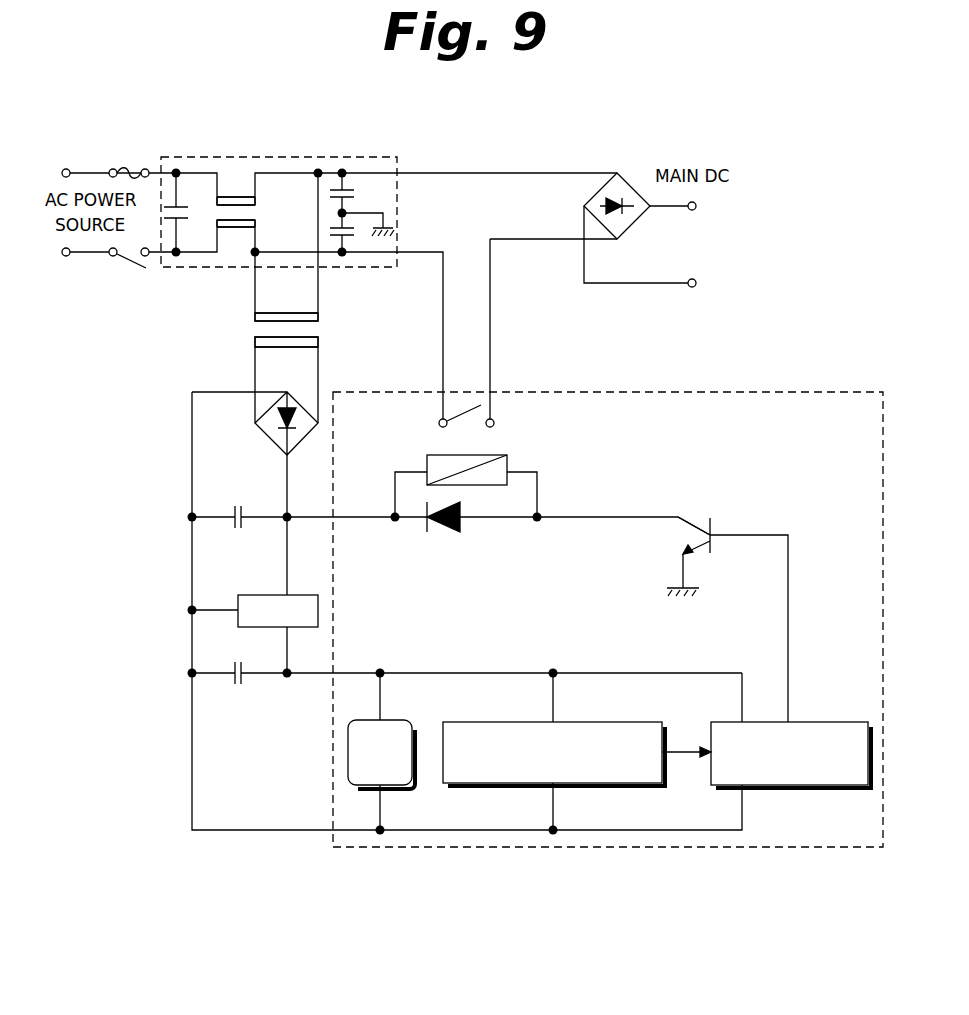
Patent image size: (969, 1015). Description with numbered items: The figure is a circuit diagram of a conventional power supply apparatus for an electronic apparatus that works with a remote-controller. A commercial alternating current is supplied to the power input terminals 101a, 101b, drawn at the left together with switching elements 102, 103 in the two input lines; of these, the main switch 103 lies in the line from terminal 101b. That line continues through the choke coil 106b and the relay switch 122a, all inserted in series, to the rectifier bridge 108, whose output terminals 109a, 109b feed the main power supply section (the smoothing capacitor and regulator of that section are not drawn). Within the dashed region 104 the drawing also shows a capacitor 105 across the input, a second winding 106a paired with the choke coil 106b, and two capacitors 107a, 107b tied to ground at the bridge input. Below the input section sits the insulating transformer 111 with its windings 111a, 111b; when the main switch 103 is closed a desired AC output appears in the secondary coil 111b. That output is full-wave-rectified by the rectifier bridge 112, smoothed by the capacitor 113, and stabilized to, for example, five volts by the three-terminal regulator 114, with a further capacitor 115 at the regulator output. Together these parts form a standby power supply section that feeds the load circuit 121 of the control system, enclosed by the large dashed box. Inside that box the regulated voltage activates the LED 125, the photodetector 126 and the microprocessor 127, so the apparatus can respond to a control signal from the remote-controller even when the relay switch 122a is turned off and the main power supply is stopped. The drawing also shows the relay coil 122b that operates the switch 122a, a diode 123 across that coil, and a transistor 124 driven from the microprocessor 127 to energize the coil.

The power input terminal 101a is at (66, 168).
The power input terminal 101b is at (66, 256).
The switch 102 is at (128, 169).
The main switch 103 is at (132, 271).
The input circuit 104 is at (362, 157).
The capacitor 105 is at (182, 212).
The primary electrode 106a is at (240, 197).
The choke coil 106b is at (236, 227).
The capacitor 107a is at (355, 193).
The capacitor 107b is at (355, 235).
The rectifier bridge 108 is at (612, 172).
The output terminal 109a is at (697, 206).
The output terminal 109b is at (697, 283).
The insulating transformer 111 is at (258, 330).
The secondary electrode 111a is at (320, 316).
The secondary coil 111b is at (320, 343).
The rectifier bridge 112 is at (268, 440).
The capacitor 113 is at (240, 531).
The three-terminal regulator 114 is at (310, 612).
The capacitor 115 is at (240, 687).
The load circuit of the control system 121 is at (660, 392).
The switch 122a is at (468, 405).
The relay coil 122b is at (510, 466).
The diode 123 is at (458, 536).
The transistor 124 is at (678, 541).
The LED 125 is at (405, 720).
The photodetector 126 is at (583, 722).
The microprocessor 127 is at (830, 722).